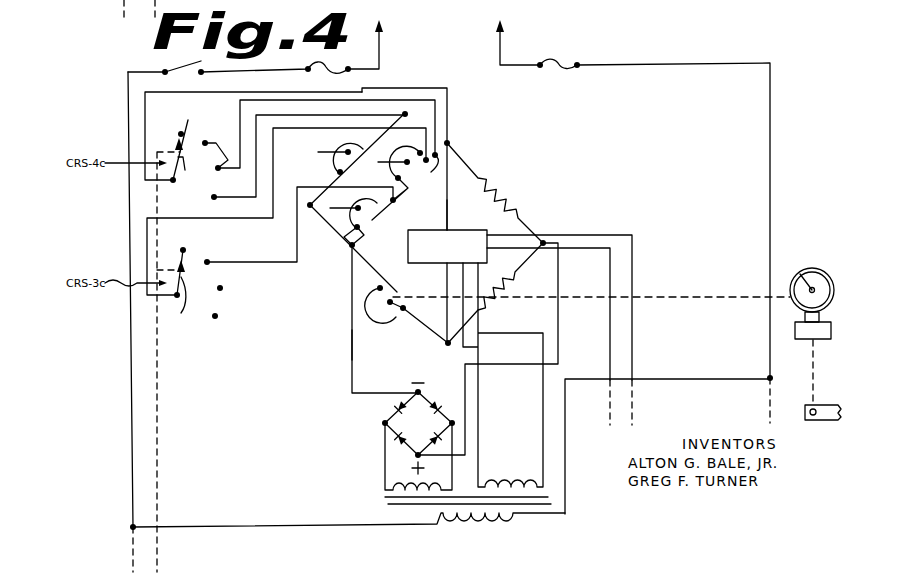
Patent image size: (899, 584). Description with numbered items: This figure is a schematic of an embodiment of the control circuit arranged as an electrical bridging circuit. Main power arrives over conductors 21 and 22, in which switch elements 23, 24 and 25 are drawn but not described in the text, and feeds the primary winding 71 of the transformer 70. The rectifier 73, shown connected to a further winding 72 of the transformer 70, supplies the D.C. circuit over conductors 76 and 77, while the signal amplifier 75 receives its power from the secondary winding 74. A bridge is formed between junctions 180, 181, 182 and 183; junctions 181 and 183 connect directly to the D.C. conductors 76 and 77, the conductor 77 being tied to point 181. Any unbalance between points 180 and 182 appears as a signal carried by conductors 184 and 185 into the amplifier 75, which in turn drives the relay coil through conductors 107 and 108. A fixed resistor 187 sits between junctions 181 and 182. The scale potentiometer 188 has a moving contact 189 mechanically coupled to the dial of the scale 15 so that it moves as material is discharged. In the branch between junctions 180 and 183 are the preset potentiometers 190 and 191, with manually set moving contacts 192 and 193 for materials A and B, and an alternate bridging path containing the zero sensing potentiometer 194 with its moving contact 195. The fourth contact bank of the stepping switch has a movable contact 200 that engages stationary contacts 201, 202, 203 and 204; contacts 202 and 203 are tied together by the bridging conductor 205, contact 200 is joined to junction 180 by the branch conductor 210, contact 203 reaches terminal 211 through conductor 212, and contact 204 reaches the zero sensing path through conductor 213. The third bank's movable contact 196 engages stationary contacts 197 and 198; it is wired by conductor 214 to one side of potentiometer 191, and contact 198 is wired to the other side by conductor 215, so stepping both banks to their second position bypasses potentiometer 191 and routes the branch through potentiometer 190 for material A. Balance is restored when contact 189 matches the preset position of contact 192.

The scale 15 is at (825, 340).
The power supply conductor 21 is at (135, 68).
The power supply conductor 22 is at (724, 63).
The switch 23 is at (185, 67).
The switch 24 is at (336, 64).
The switch 25 is at (560, 60).
The transformer 70 is at (378, 503).
The primary winding 71 is at (463, 530).
The secondary winding 72 is at (388, 484).
The rectifier 73 is at (392, 416).
The secondary winding 74 is at (515, 474).
The signal amplifier 75 is at (486, 229).
The D.C. circuit conductor 76 is at (351, 345).
The D.C. supply conductor 77 is at (559, 328).
The conductor 107 is at (632, 235).
The conductor 108 is at (586, 249).
The junction 180 is at (452, 143).
The junction 181 is at (548, 241).
The junction 182 is at (446, 344).
The junction 183 is at (348, 250).
The conductor 184 is at (446, 212).
The conductor 185 is at (447, 282).
The resistor 187 is at (496, 189).
The scale potentiometer 188 is at (381, 314).
The moving contact 189 is at (392, 308).
The preset potentiometer 190 is at (346, 233).
The preset potentiometer 191 is at (416, 139).
The moving contact 192 is at (333, 212).
The moving contact 193 is at (384, 172).
The zero sensing potentiometer 194 is at (334, 172).
The moving contact 195 is at (316, 157).
The movable contact 196 is at (177, 305).
The stationary contact 197 is at (187, 252).
The stationary contact 198 is at (212, 264).
The movable contact 200 is at (187, 179).
The stationary contact 201 is at (191, 140).
The stationary contact 202 is at (204, 142).
The stationary contact 203 is at (219, 172).
The stationary contact 204 is at (216, 200).
The bridging conductor 205 is at (220, 158).
The branch conductor 210 is at (256, 90).
The terminal 211 is at (430, 173).
The conductor 212 is at (363, 92).
The conductor 213 is at (338, 112).
The conductor 214 is at (147, 242).
The conductor 215 is at (277, 259).